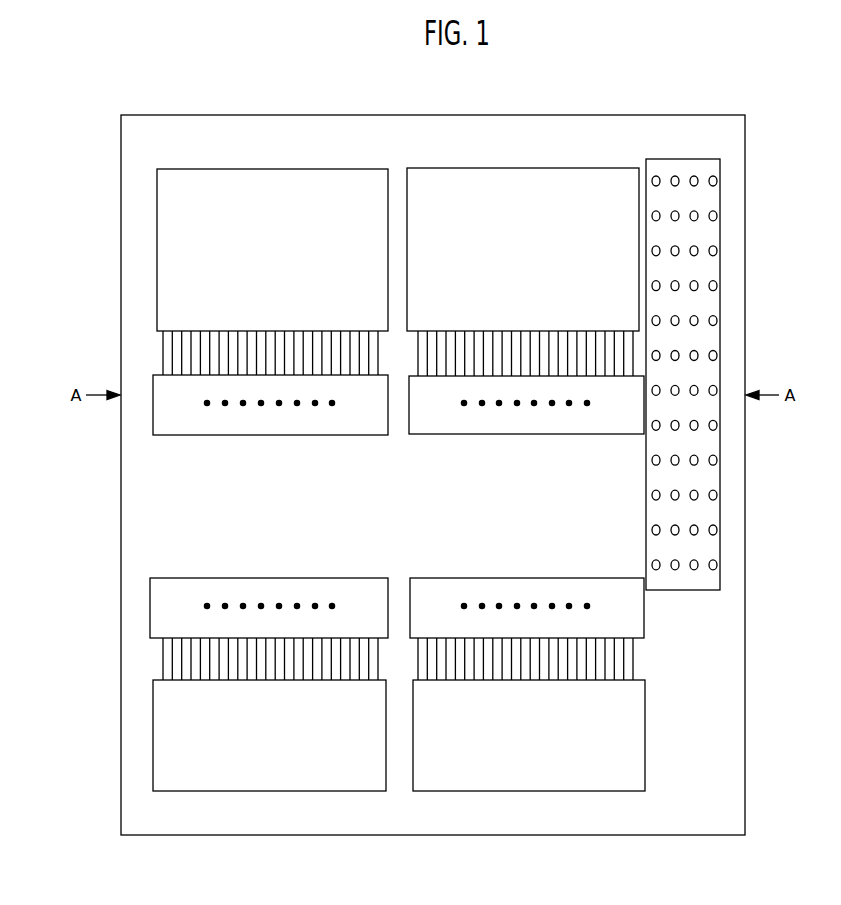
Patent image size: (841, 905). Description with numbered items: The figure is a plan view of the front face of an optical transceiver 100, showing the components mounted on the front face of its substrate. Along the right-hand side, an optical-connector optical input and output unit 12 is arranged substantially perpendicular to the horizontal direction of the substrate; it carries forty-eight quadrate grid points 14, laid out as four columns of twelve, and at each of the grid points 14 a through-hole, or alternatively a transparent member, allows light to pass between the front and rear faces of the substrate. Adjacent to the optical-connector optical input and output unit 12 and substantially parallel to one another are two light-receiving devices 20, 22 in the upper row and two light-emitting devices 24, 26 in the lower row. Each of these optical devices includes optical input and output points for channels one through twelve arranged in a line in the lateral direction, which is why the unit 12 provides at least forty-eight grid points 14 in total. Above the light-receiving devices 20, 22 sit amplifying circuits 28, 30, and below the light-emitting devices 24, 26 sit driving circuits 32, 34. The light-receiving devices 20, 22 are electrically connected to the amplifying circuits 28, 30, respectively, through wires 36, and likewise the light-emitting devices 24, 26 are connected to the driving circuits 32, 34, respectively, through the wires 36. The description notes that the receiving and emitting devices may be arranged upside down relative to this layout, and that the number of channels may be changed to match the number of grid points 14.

The optical transceiver 100 is at (524, 70).
The optical-connector optical input and output unit 12 is at (719, 338).
The grid points 14 is at (713, 249).
The light-receiving device 20 is at (268, 437).
The light-receiving device 22 is at (518, 436).
The light-emitting device 24 is at (228, 584).
The light-emitting device 26 is at (488, 584).
The amplifying circuit 28 is at (301, 178).
The amplifying circuit 30 is at (552, 178).
The driving circuit 32 is at (308, 781).
The driving circuit 34 is at (569, 780).
The wires 36 is at (168, 354).